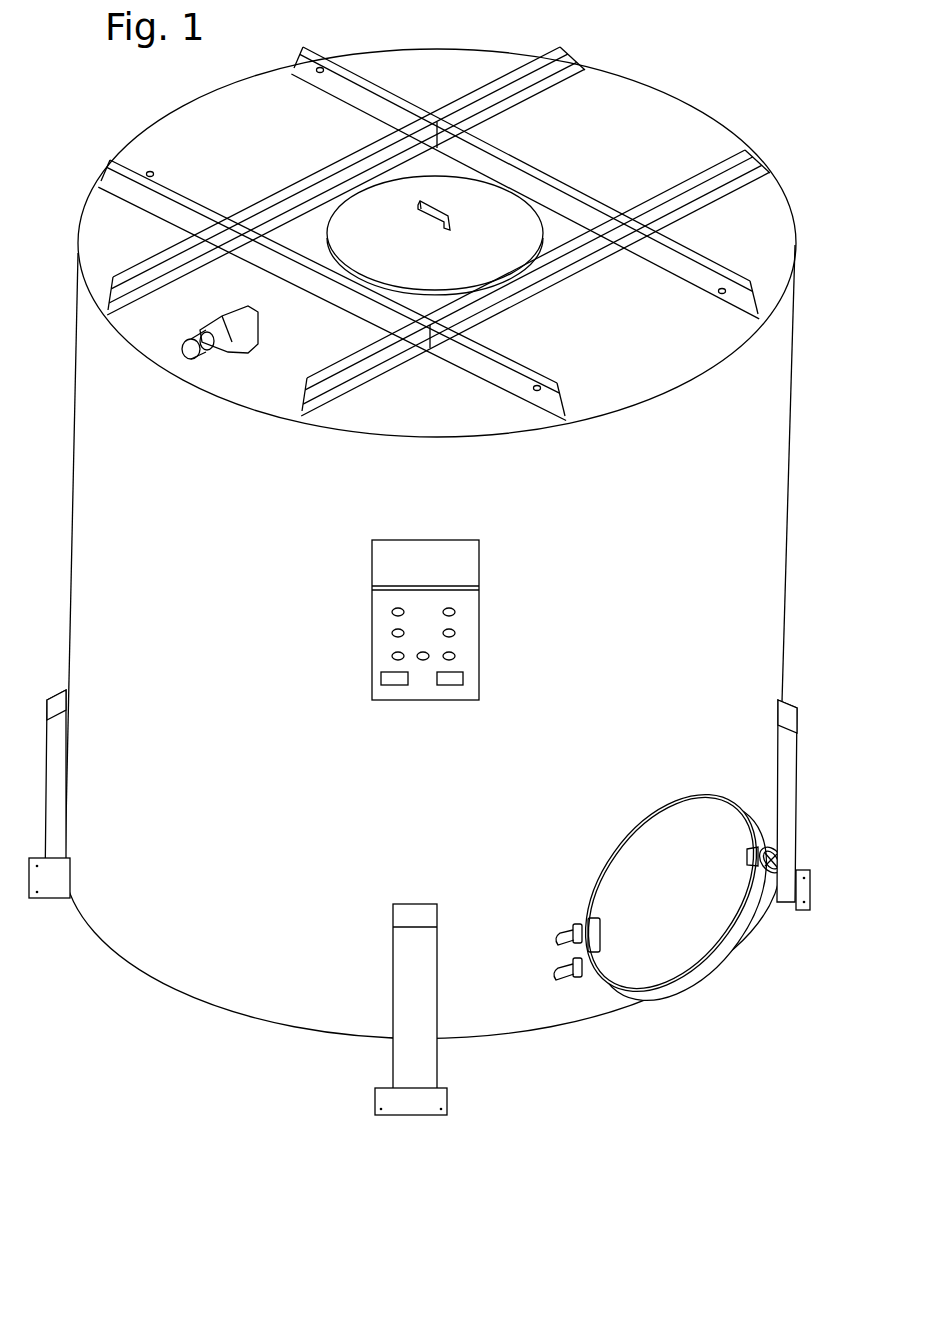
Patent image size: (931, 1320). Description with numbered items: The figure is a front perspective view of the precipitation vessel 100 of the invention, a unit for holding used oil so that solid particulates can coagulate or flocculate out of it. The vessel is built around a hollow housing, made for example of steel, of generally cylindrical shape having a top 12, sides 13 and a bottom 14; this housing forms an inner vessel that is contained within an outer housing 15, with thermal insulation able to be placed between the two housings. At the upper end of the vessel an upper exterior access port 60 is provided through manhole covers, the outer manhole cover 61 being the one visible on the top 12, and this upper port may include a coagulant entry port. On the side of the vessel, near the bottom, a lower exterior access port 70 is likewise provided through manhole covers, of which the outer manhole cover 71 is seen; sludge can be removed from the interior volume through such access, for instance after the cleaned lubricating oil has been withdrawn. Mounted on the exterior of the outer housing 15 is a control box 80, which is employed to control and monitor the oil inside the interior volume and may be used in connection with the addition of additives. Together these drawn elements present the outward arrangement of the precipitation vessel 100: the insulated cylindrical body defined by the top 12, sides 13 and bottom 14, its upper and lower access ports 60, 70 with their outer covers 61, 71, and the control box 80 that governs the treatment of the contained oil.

The precipitation vessel 100 is at (180, 90).
The top 12 is at (611, 120).
The sides 13 is at (802, 316).
The bottom 14 is at (178, 1016).
The outer housing 15 is at (442, 820).
The upper exterior access port 60 is at (428, 178).
The outer manhole cover 61 is at (410, 255).
The lower exterior access port 70 is at (675, 897).
The outer manhole cover 71 is at (707, 875).
The control box 80 is at (480, 620).